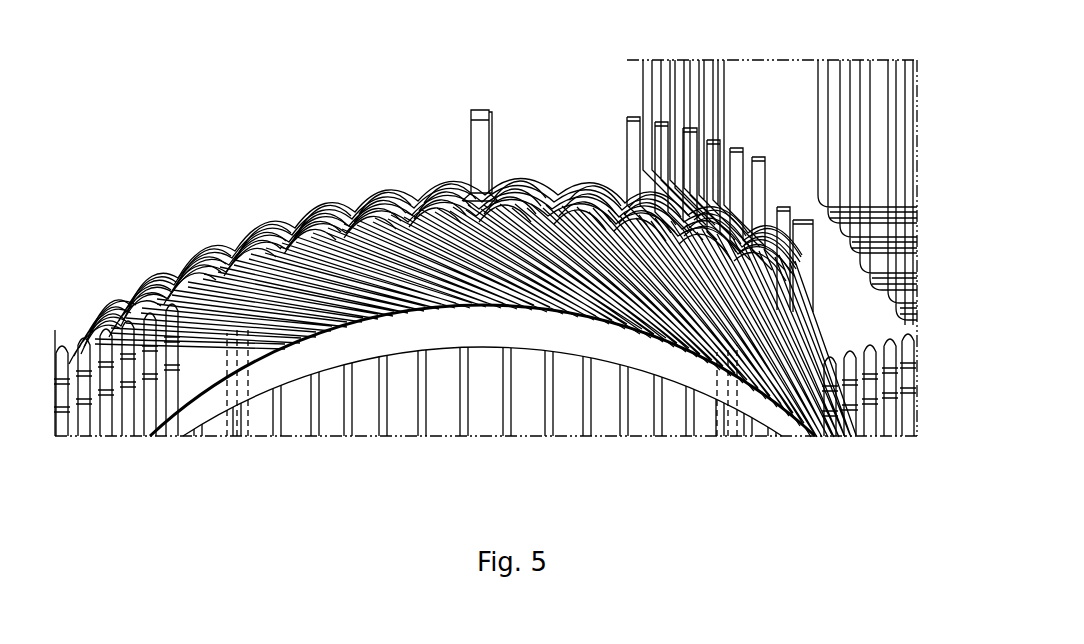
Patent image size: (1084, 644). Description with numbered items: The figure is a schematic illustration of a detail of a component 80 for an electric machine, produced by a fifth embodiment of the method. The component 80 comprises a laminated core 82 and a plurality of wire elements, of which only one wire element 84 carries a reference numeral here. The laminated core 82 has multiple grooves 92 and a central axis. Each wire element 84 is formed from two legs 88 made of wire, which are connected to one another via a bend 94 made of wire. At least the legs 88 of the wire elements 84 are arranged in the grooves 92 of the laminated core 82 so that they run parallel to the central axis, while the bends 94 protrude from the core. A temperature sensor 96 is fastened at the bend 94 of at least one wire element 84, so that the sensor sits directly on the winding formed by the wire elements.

The component 80 is at (198, 140).
The laminated core 82 is at (605, 430).
The wire element 84 is at (433, 174).
The legs 88 is at (237, 444).
The grooves 92 is at (422, 442).
The bend 94 is at (328, 190).
The temperature sensor 96 is at (480, 112).